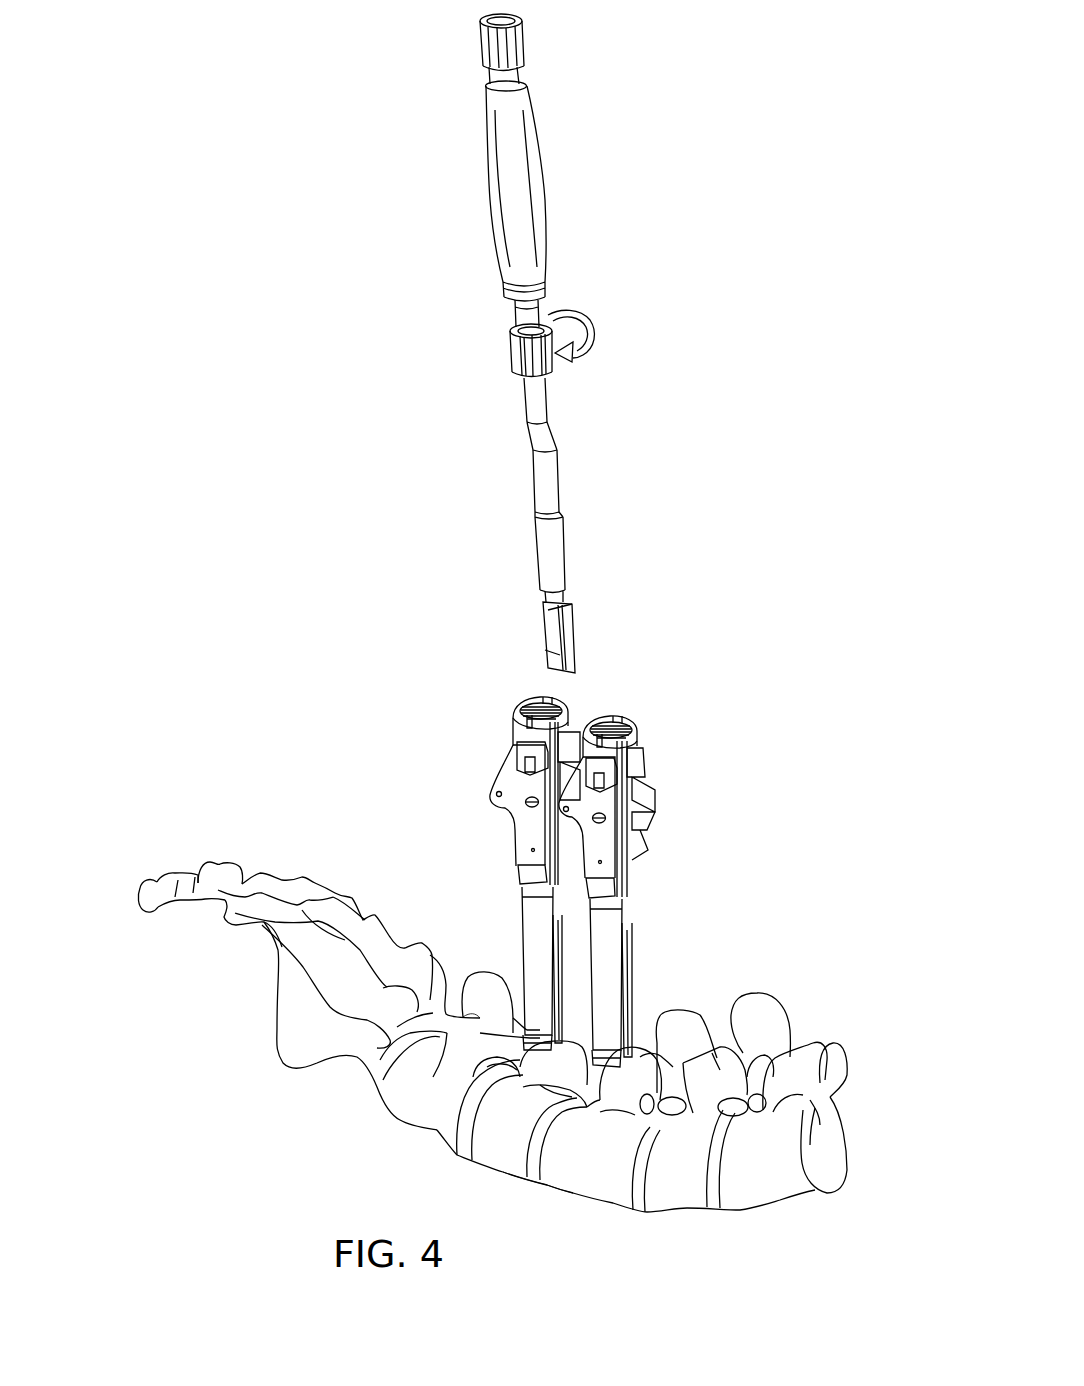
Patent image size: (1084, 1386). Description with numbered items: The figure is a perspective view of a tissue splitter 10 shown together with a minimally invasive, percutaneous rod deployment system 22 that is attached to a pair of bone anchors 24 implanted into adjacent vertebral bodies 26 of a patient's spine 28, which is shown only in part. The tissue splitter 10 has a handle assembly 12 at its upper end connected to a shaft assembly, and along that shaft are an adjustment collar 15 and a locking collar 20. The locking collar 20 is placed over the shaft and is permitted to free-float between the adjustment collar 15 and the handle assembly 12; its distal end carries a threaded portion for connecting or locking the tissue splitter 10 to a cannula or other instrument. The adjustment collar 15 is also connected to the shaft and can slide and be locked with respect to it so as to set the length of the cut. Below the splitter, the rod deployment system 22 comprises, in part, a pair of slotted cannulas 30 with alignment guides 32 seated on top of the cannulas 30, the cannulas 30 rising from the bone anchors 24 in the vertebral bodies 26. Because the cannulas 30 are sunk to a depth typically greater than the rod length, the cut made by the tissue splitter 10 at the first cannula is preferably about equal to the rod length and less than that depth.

The tissue splitter 10 is at (568, 146).
The handle assembly 12 is at (487, 200).
The adjustment collar 15 is at (527, 437).
The locking collar 20 is at (509, 361).
The minimally invasive, percutaneous rod deployment system 22 is at (670, 777).
The bone anchors 24 is at (513, 1033).
The vertebral bodies 26 is at (573, 1192).
The spine 28 is at (694, 1217).
The slotted cannulas 30 is at (532, 897).
The alignment guides 32 is at (513, 798).